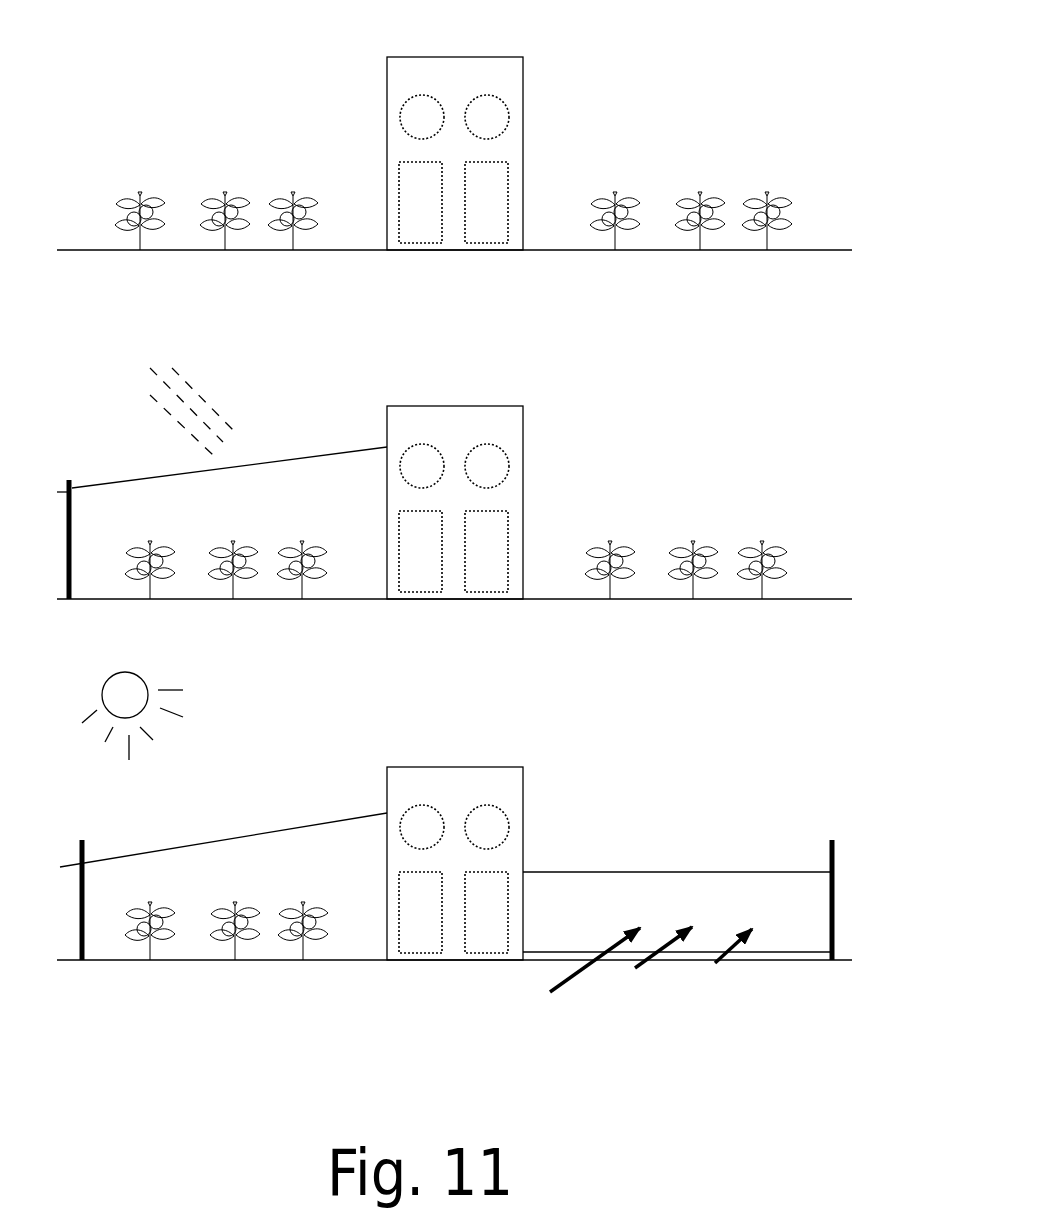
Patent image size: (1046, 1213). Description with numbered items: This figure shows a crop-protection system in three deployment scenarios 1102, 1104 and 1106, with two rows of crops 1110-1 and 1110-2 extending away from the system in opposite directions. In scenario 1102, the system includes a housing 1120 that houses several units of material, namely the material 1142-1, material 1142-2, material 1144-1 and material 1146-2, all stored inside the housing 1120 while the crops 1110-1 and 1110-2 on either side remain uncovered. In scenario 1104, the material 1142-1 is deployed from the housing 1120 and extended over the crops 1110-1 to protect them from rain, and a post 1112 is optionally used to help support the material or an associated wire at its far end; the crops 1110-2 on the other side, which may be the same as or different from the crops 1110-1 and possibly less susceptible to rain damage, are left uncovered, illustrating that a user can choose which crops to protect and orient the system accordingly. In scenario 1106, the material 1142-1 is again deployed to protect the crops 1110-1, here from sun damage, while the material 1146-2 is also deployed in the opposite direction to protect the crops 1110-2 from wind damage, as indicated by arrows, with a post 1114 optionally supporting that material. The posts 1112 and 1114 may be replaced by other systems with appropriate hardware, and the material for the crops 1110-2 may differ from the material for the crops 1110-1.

The scenario 1102 is at (523, 25).
The scenario 1104 is at (523, 376).
The scenario 1106 is at (454, 832).
The crops 1110-1 is at (208, 142).
The crops 1110-2 is at (727, 150).
The post 1112 is at (67, 478).
The post 1114 is at (830, 838).
The housing 1120 is at (523, 80).
The material 1142-1 is at (398, 117).
The material 1142-2 is at (510, 117).
The material 1144-1 is at (398, 180).
The material 1146-2 is at (506, 176).